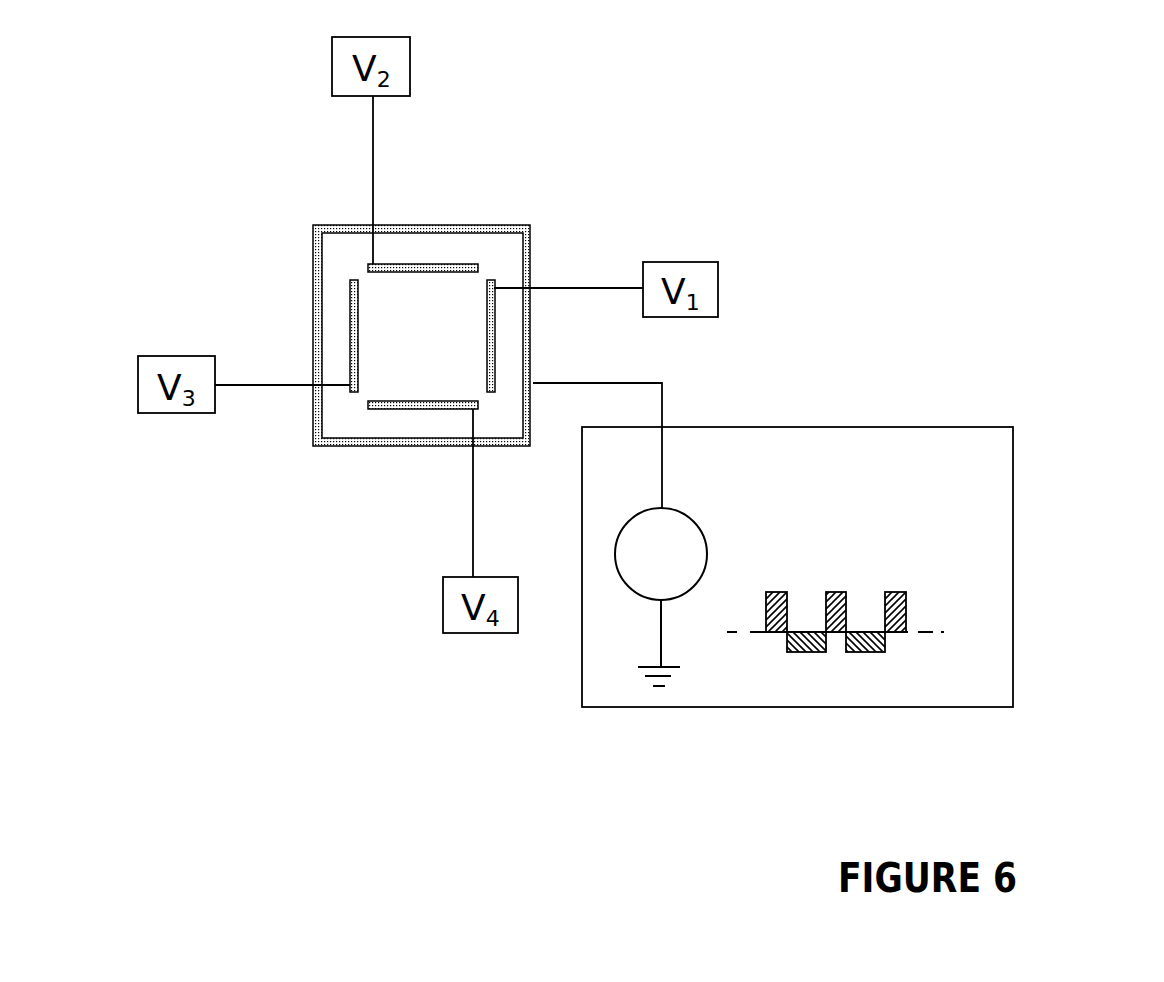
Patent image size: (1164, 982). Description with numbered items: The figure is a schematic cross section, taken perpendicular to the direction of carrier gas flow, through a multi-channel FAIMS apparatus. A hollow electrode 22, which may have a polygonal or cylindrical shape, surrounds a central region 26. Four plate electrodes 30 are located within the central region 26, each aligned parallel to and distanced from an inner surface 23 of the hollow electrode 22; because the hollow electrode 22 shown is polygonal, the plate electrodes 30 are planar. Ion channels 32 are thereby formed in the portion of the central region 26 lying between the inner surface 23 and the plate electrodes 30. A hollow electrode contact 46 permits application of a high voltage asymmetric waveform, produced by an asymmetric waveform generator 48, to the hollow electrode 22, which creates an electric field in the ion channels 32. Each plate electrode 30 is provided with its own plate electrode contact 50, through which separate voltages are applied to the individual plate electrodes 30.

The hollow electrode 22 is at (533, 344).
The inner surface 23 is at (515, 227).
The central region 26 is at (413, 337).
The plate electrodes 30 is at (400, 267).
The ion channels 32 is at (338, 293).
The hollow electrode contact 46 is at (665, 412).
The asymmetric waveform generator 48 is at (1013, 567).
The plate electrode contacts 50 is at (578, 287).